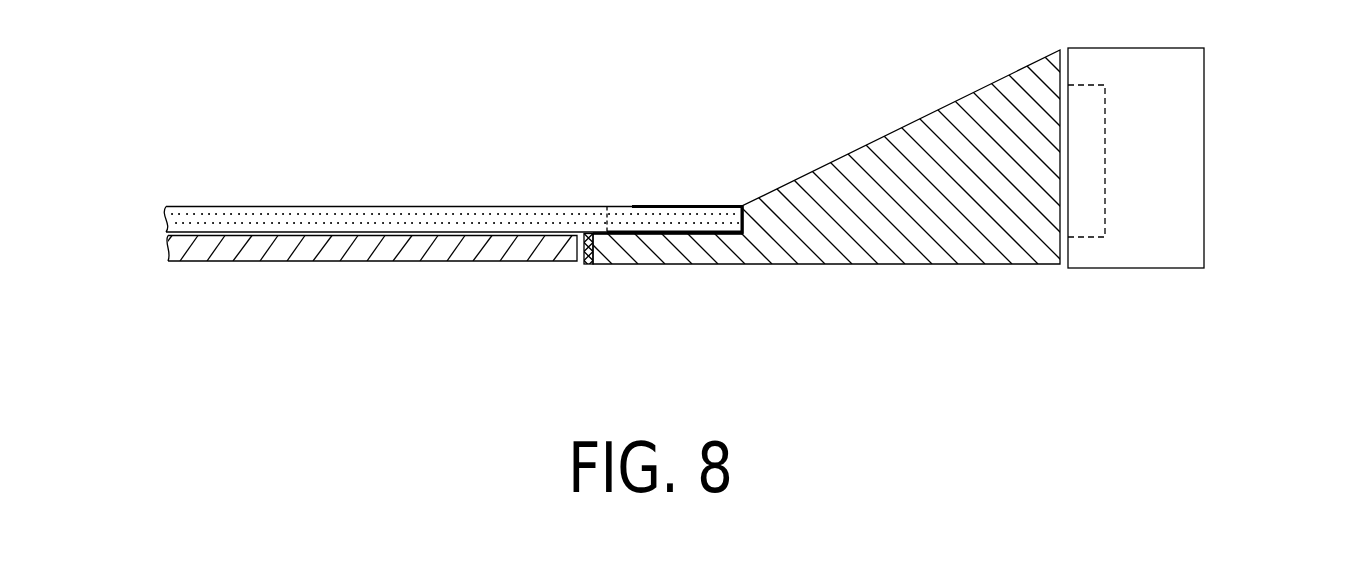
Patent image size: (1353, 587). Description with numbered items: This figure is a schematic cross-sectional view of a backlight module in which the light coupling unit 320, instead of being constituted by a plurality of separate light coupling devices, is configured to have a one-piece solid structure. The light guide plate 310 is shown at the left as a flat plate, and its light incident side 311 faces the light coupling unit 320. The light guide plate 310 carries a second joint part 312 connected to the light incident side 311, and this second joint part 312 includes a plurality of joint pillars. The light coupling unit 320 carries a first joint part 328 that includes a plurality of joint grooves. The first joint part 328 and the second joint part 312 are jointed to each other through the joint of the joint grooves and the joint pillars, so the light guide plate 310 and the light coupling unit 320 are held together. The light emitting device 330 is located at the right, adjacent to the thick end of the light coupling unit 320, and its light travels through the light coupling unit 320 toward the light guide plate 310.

The light guide plate 310 is at (273, 220).
The light incident side 311 is at (606, 217).
The second joint part 312 is at (632, 213).
The light coupling unit 320 is at (850, 250).
The first joint part 328 is at (712, 234).
The light emitting device 330 is at (1192, 160).